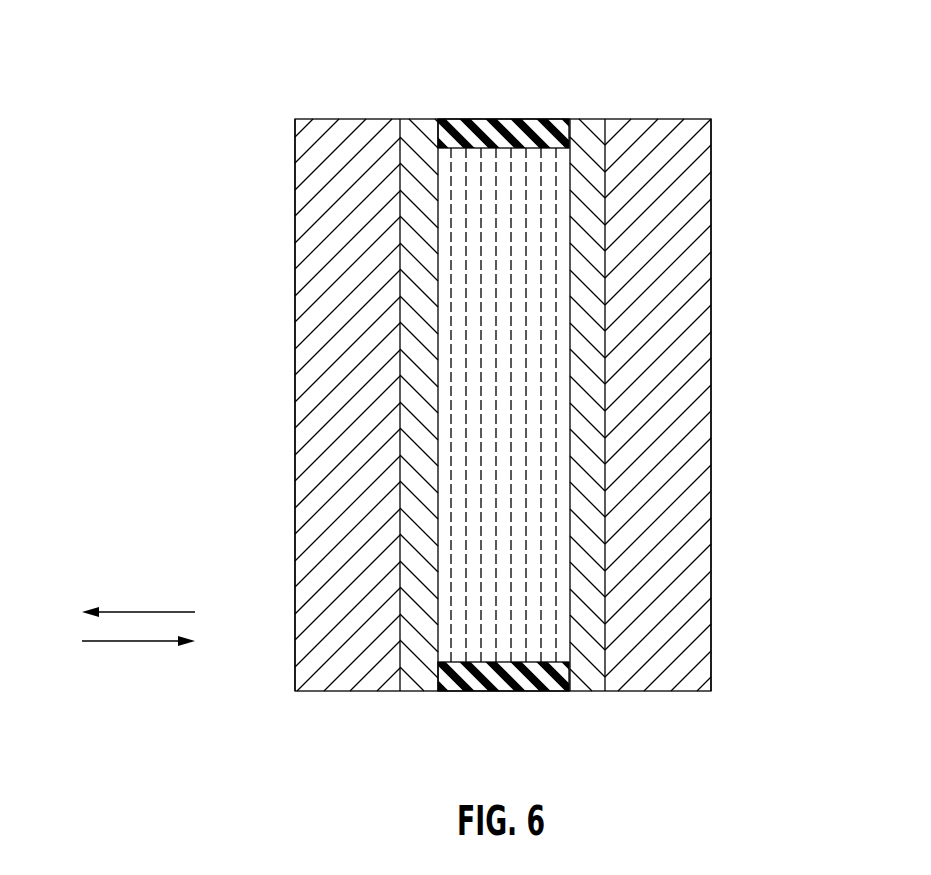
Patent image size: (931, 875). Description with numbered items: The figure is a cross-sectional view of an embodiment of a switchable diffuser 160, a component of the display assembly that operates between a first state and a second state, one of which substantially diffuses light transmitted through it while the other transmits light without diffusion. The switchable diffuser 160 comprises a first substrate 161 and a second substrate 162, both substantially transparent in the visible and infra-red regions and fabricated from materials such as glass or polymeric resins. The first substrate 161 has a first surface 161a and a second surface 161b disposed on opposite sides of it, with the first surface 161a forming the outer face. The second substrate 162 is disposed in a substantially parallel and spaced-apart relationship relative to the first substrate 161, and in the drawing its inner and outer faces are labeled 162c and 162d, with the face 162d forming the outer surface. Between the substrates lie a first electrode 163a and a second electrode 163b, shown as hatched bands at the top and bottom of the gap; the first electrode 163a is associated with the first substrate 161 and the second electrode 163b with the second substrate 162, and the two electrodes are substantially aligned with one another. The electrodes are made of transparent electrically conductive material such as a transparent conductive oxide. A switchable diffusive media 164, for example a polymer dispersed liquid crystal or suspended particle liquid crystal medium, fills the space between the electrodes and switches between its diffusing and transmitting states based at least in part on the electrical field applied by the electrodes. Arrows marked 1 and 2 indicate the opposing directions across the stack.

The switchable diffuser 160 is at (203, 66).
The first substrate 161 is at (338, 250).
The first surface 161a is at (295, 163).
The second surface 161b is at (408, 119).
The second substrate 162 is at (678, 243).
The inner layer of second electrode 162c is at (600, 119).
The outer surface of second electrode 162d is at (711, 167).
The first electrode 163a is at (422, 119).
The second electrode 163b is at (586, 119).
The switchable diffusive media 164 is at (525, 473).
The first direction 1 is at (131, 614).
The second direction 2 is at (152, 643).